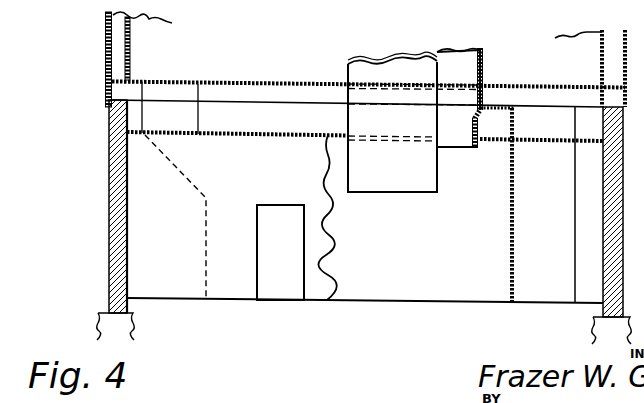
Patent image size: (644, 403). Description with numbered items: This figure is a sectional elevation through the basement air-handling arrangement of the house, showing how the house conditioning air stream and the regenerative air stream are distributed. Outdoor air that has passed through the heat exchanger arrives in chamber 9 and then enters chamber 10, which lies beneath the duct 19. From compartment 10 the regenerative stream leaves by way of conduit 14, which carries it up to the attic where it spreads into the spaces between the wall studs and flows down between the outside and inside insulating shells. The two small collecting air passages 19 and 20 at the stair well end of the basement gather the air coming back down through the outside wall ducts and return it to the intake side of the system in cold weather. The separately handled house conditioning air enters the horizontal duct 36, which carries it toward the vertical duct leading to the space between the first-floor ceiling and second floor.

The chamber 9 is at (282, 287).
The chamber 10 is at (232, 282).
The conduit 14 is at (388, 180).
The collecting air passage 19 is at (238, 113).
The collecting air passage 20 is at (493, 98).
The horizontal duct 36 is at (466, 135).